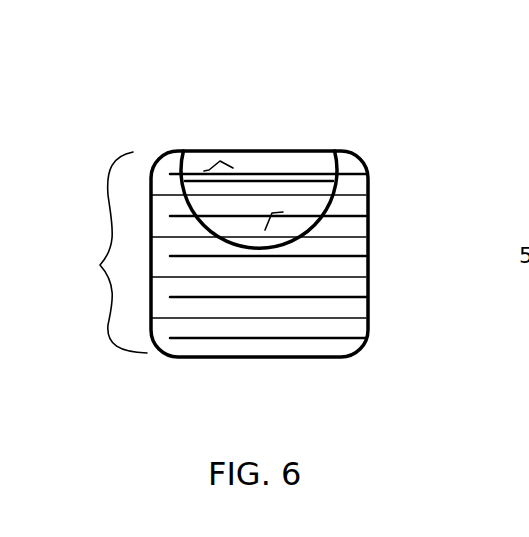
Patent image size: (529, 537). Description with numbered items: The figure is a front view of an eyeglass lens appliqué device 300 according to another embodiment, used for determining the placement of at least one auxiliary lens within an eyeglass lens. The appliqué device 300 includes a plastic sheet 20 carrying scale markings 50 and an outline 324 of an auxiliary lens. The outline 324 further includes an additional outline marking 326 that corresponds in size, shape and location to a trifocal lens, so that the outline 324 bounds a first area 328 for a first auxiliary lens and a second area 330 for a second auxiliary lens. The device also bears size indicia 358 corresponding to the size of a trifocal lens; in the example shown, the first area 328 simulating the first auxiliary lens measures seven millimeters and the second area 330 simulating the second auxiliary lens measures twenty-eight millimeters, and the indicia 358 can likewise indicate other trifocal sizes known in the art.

The eyeglass lens appliqué device 300 is at (131, 107).
The plastic sheet 20 is at (370, 306).
The scale markings 50 is at (104, 252).
The outline 324 is at (326, 210).
The additional outline marking 326 is at (282, 178).
The first area 328 is at (217, 162).
The second area 330 is at (272, 213).
The size indicia 358 is at (289, 343).